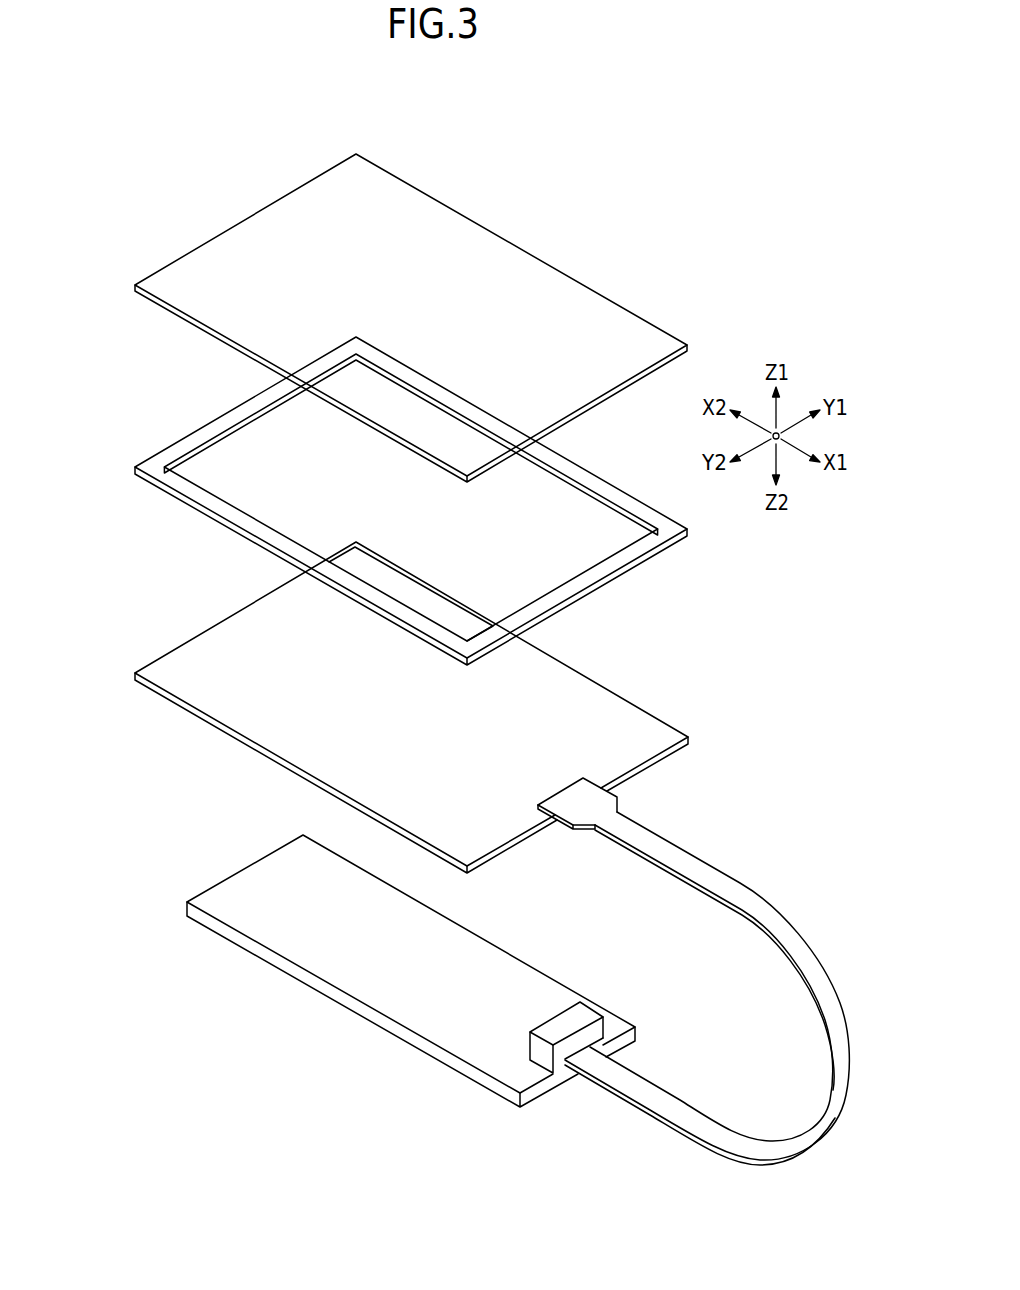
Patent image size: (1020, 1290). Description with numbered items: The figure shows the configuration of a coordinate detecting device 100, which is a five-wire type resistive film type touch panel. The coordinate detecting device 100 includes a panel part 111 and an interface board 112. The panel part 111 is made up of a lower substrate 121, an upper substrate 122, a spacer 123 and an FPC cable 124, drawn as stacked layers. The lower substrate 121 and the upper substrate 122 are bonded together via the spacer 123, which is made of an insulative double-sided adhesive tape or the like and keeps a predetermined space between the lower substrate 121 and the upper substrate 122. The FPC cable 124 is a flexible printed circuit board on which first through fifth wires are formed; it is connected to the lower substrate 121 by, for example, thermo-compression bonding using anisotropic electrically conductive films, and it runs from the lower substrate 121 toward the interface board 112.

The coordinate detecting device 100 is at (115, 156).
The panel part 111 is at (71, 307).
The interface board 112 is at (196, 881).
The lower substrate 121 is at (148, 648).
The upper substrate 122 is at (146, 316).
The spacer 123 is at (148, 441).
The FPC cable 124 is at (772, 952).